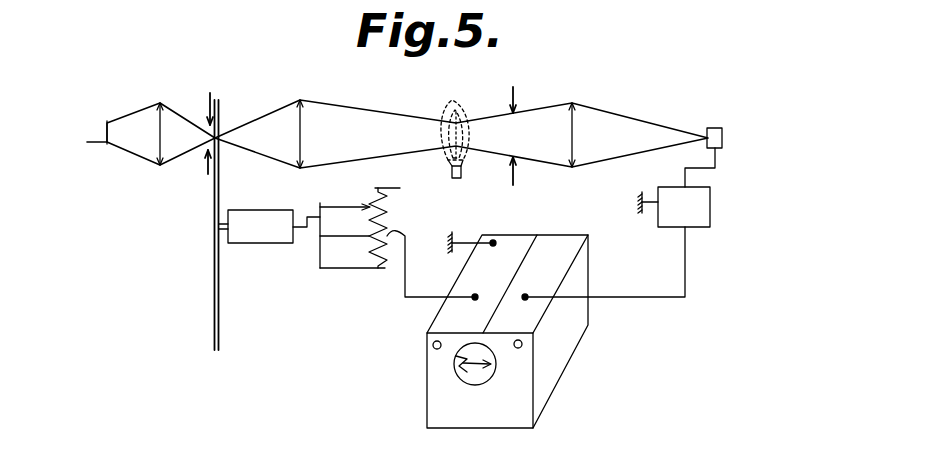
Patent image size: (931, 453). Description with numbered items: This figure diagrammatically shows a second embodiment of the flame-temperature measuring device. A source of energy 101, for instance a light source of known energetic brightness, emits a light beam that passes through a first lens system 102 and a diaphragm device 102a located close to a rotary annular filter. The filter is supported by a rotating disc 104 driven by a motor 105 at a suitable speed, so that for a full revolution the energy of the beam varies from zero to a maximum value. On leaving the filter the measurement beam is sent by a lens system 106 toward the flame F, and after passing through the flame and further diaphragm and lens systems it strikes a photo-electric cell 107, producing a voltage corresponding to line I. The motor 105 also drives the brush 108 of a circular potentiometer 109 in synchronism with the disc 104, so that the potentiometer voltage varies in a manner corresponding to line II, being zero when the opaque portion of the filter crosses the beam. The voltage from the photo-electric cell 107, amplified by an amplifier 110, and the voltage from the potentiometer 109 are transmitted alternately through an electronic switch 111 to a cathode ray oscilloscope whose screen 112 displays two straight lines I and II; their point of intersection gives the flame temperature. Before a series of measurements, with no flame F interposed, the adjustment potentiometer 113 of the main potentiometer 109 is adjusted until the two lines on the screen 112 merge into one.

The source of energy 101 is at (106, 126).
The first lens system 102 is at (182, 93).
The diaphragm device 102a is at (230, 82).
The rotating disc 104 is at (213, 197).
The motor 105 is at (243, 231).
The lens 106 is at (316, 113).
The photo-electric cell 107 is at (713, 134).
The brush 108 is at (317, 213).
The circular potentiometer 109 is at (320, 266).
The amplifier 110 is at (688, 211).
The electronic switch 111 is at (563, 345).
The screen 112 is at (480, 375).
The adjustment potentiometer 113 is at (386, 212).
The flame F is at (466, 112).
The line I is at (462, 358).
The line II is at (463, 372).